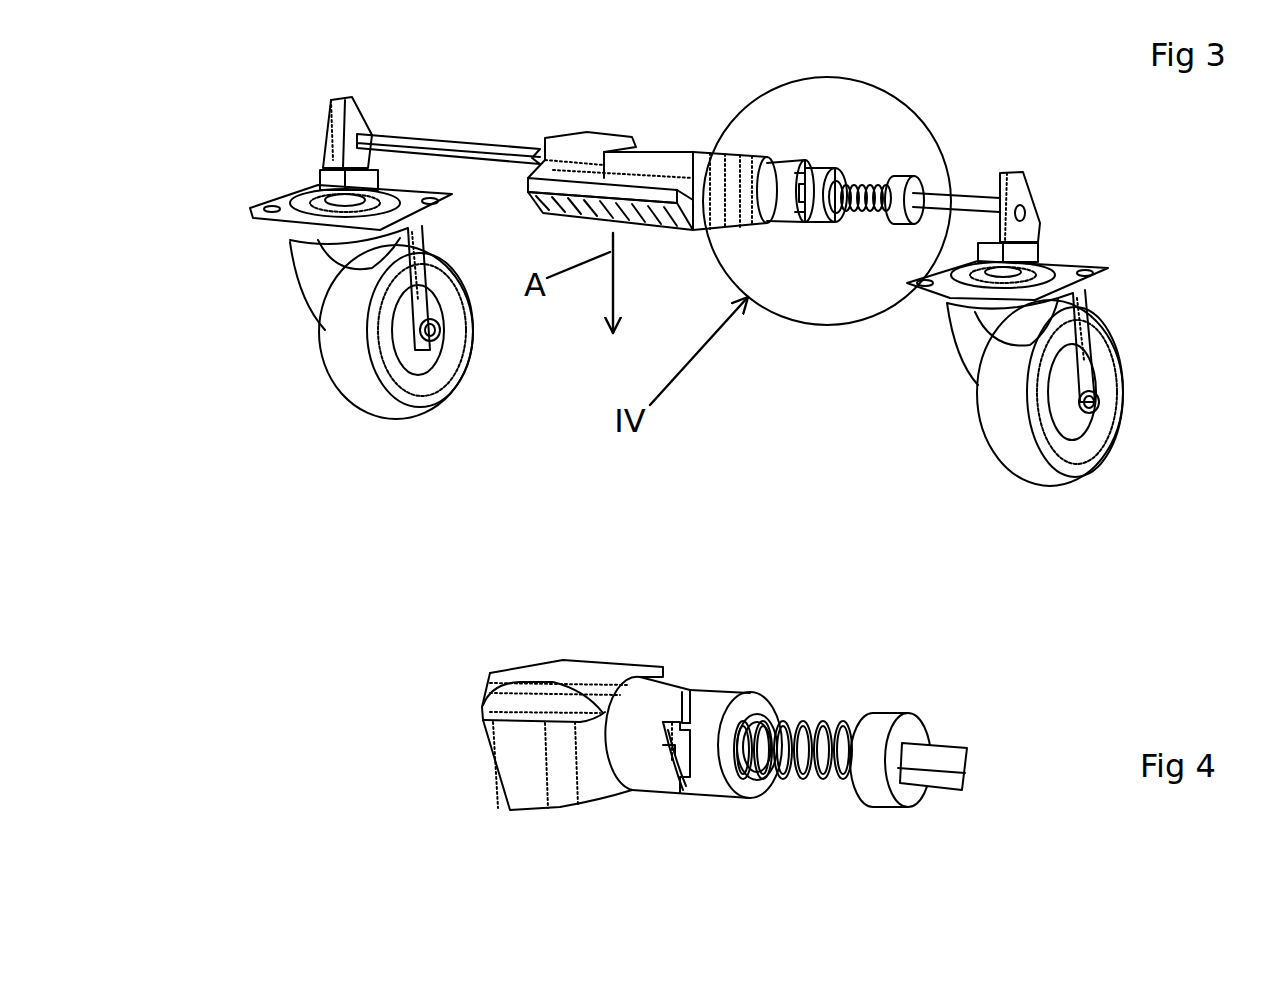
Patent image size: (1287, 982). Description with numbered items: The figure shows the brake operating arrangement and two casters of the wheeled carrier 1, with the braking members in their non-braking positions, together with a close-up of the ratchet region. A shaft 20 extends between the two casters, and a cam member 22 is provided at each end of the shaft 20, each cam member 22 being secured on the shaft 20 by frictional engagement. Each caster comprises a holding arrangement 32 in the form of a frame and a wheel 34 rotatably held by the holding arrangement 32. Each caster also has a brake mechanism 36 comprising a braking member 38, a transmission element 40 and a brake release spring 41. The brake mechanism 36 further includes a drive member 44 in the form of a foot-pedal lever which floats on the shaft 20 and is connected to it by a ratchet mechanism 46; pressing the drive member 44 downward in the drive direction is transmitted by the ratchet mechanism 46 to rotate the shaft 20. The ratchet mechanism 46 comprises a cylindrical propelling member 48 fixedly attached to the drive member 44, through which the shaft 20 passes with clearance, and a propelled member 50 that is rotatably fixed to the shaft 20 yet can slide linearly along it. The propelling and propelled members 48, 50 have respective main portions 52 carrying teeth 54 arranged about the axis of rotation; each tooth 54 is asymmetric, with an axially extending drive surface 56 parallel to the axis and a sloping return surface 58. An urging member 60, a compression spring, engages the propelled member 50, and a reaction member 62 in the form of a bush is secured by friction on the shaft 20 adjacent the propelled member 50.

In FIG. 3, the transport device 1 is at (1140, 415).
In FIG. 3, the shaft 20 is at (444, 143).
In FIG. 4, the shaft 20 is at (950, 748).
In FIG. 3, the cam member 22 is at (320, 120).
In FIG. 3, the holding arrangement 32 is at (417, 263).
In FIG. 3, the wheel 34 is at (345, 375).
In FIG. 3, the brake mechanism 36 is at (305, 172).
In FIG. 3, the braking member 38 is at (340, 260).
In FIG. 3, the transmission element 40 is at (368, 178).
In FIG. 3, the brake release spring 41 is at (330, 205).
In FIG. 3, the drive member 44 is at (605, 140).
In FIG. 4, the drive member 44 is at (560, 672).
In FIG. 3, the ratchet mechanism 46 is at (818, 143).
In FIG. 4, the ratchet mechanism 46 is at (748, 672).
In FIG. 3, the propelling member 48 is at (785, 170).
In FIG. 4, the propelling member 48 is at (653, 702).
In FIG. 3, the propelled member 50 is at (838, 163).
In FIG. 4, the propelled member 50 is at (727, 698).
In FIG. 4, the main portion 52 is at (645, 778).
In FIG. 4, the tooth 54 is at (697, 692).
In FIG. 4, the drive surface 56 is at (667, 725).
In FIG. 4, the return surface 58 is at (677, 748).
In FIG. 3, the urging member 60 is at (857, 207).
In FIG. 4, the urging member 60 is at (800, 723).
In FIG. 3, the reaction member 62 is at (912, 173).
In FIG. 4, the reaction member 62 is at (893, 720).